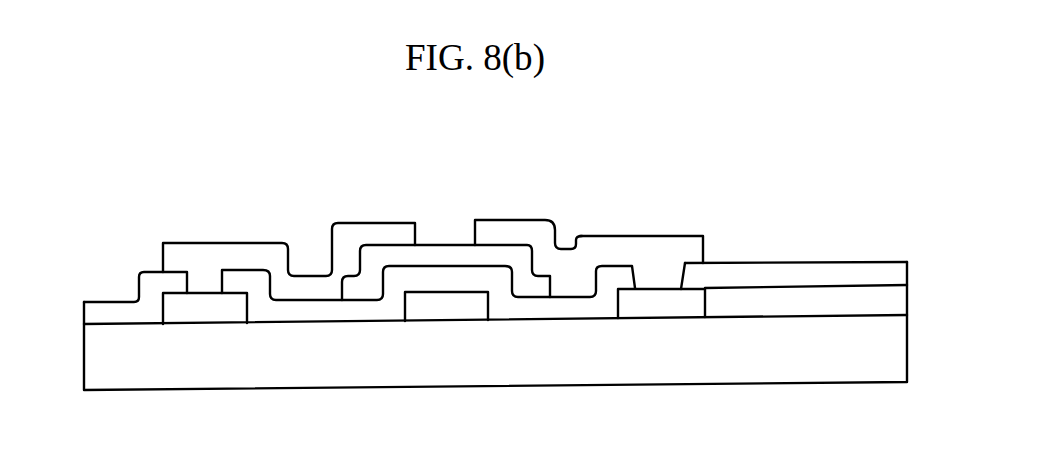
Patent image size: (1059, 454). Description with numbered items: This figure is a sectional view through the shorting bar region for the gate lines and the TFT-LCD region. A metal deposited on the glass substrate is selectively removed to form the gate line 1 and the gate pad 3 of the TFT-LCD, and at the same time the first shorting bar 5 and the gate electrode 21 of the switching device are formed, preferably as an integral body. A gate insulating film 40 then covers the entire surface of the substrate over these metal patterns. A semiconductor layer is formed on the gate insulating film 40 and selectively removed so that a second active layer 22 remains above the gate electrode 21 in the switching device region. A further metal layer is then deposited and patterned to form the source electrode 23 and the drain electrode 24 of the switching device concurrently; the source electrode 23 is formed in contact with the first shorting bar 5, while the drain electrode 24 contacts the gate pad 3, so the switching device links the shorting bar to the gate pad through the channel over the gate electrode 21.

The gate line 1 is at (792, 305).
The gate pad 3 is at (662, 308).
The first shorting bar 5 is at (205, 313).
The gate electrode 21 is at (447, 312).
The second active layer 22 is at (450, 255).
The source electrode 23 is at (242, 258).
The drain electrode 24 is at (650, 255).
The gate insulating film 40 is at (765, 273).